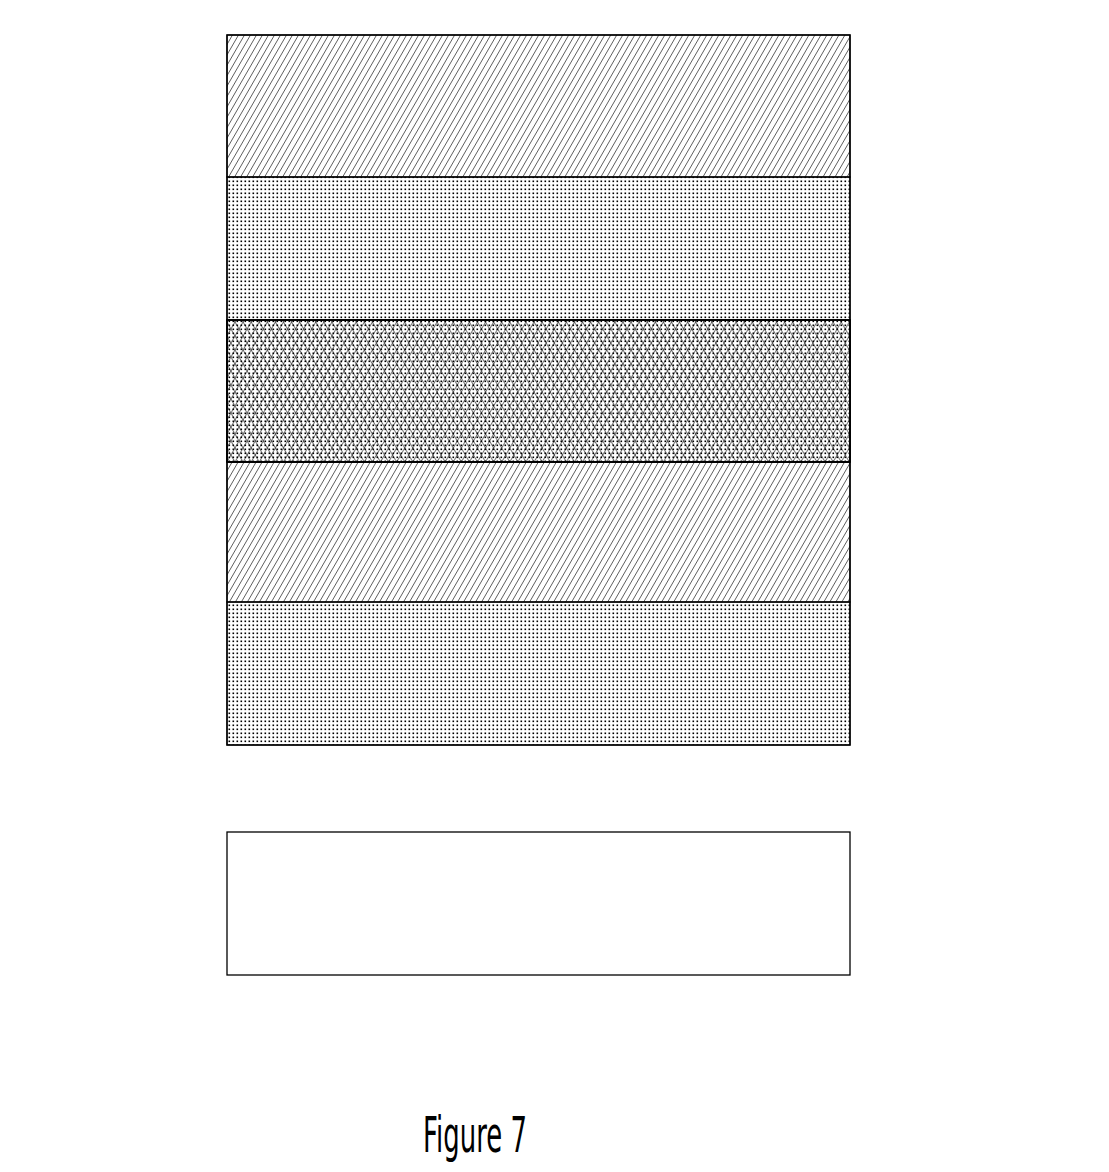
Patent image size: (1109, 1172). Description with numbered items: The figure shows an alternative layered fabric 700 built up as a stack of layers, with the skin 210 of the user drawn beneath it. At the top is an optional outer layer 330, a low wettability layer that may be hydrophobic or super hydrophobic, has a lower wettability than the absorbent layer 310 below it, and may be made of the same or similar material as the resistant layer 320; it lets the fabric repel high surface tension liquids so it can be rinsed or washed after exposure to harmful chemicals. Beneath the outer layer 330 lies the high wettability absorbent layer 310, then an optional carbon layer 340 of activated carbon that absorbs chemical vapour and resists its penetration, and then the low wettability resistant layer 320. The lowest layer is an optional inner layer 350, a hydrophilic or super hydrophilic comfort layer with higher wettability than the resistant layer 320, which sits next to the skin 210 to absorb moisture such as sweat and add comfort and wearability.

The layered fabric 700 is at (172, 114).
The outer layer 330 is at (825, 98).
The absorbent layer 310 is at (238, 248).
The carbon layer 340 is at (803, 378).
The resistant layer 320 is at (247, 549).
The inner layer 350 is at (812, 676).
The skin 210 is at (252, 894).